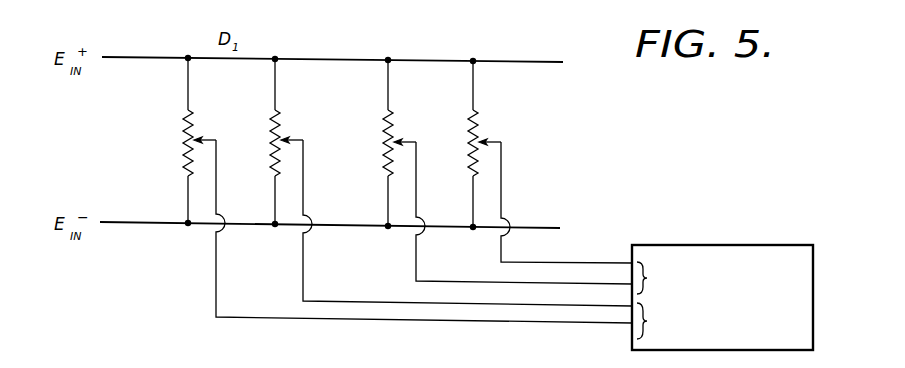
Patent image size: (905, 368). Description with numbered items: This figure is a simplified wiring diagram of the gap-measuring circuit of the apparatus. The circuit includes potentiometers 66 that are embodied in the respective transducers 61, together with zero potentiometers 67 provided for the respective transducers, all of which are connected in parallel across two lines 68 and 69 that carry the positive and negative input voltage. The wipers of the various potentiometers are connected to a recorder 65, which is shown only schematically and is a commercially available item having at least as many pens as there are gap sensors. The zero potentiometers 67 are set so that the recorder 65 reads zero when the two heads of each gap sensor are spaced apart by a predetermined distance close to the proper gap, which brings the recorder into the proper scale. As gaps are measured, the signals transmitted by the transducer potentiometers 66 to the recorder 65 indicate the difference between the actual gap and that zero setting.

The transducer 61 is at (284, 108).
The recorder 65 is at (766, 245).
The potentiometer 66 is at (284, 120).
The zero potentiometer 67 is at (190, 112).
The line 68 is at (137, 57).
The line 69 is at (135, 224).